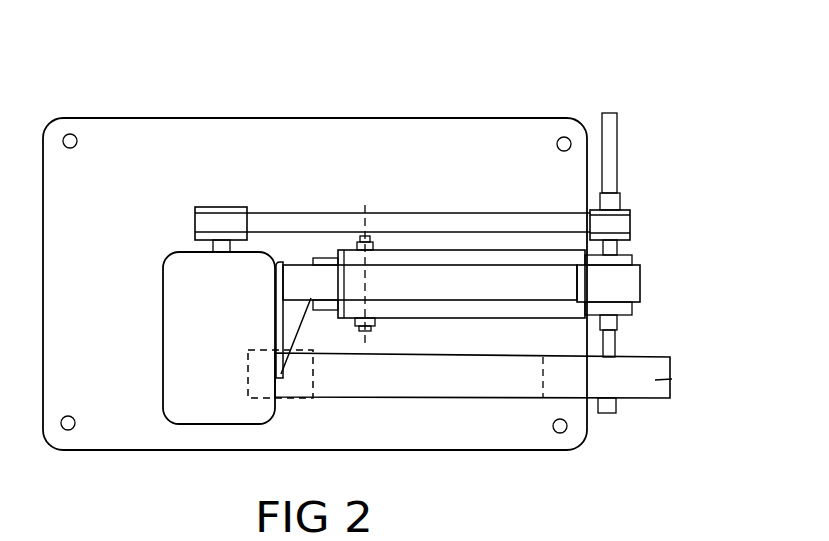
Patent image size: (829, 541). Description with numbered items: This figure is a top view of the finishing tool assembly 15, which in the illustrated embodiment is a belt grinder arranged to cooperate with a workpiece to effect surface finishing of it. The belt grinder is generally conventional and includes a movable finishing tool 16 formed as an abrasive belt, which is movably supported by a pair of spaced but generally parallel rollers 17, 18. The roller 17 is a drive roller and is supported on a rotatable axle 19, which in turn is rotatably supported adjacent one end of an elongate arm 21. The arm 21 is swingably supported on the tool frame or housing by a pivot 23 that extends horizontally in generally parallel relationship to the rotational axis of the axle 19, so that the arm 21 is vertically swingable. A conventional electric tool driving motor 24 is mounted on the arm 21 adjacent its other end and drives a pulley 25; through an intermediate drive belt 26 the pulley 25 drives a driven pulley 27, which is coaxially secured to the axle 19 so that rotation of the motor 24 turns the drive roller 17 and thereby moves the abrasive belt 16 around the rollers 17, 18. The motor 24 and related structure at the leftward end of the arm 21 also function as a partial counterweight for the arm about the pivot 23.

The finishing tool assembly 15 is at (352, 136).
The movable finishing tool 16 is at (443, 382).
The drive roller 17 is at (658, 380).
The roller 18 is at (290, 383).
The rotatable axle 19 is at (608, 343).
The elongate arm 21 is at (453, 280).
The pivot 23 is at (365, 209).
The electric tool driving motor 24 is at (180, 322).
The pulley 25 is at (217, 207).
The intermediate drive belt 26 is at (308, 222).
The driven pulley 27 is at (620, 213).